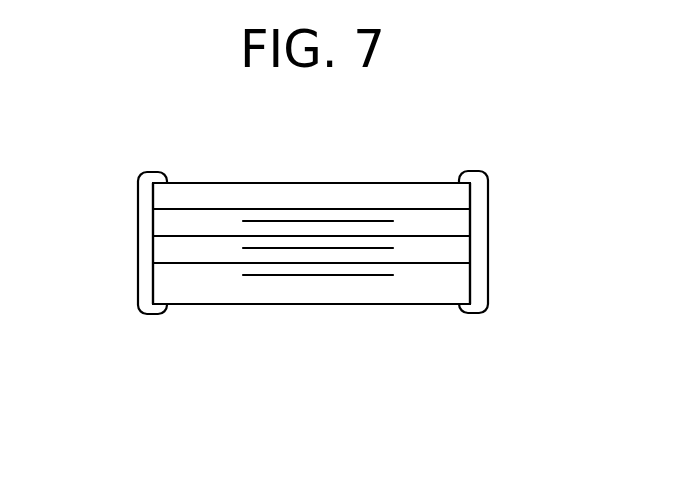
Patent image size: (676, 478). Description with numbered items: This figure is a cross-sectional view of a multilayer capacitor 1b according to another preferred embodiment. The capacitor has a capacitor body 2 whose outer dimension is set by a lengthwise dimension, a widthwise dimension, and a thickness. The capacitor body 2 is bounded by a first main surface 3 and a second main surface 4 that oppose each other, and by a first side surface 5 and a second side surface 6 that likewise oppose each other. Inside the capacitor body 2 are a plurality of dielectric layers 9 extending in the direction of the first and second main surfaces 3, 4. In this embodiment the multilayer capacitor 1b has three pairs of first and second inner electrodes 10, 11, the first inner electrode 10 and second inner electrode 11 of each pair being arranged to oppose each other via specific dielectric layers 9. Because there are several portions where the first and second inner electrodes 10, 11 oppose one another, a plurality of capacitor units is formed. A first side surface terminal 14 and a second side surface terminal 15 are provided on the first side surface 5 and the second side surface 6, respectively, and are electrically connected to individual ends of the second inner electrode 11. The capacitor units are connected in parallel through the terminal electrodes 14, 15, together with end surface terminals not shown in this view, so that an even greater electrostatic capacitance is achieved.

The multilayer capacitor 1b is at (196, 115).
The capacitor body 2 is at (411, 176).
The first main surface 3 is at (333, 183).
The second main surface 4 is at (303, 305).
The first side surface 5 is at (152, 200).
The second side surface 6 is at (472, 196).
The dielectric layers 9 is at (348, 267).
The first inner electrode 10 is at (267, 248).
The second inner electrode 11 is at (273, 248).
The first side surface terminal 14 is at (147, 248).
The second side surface terminal 15 is at (478, 245).